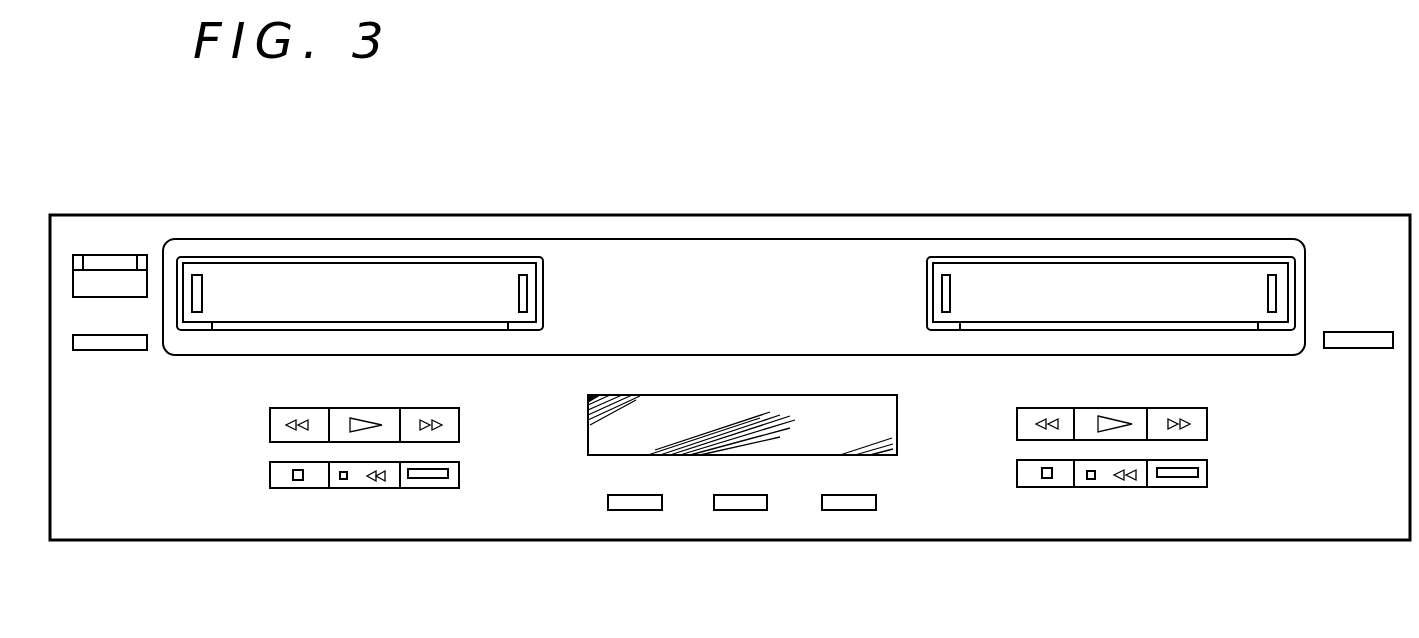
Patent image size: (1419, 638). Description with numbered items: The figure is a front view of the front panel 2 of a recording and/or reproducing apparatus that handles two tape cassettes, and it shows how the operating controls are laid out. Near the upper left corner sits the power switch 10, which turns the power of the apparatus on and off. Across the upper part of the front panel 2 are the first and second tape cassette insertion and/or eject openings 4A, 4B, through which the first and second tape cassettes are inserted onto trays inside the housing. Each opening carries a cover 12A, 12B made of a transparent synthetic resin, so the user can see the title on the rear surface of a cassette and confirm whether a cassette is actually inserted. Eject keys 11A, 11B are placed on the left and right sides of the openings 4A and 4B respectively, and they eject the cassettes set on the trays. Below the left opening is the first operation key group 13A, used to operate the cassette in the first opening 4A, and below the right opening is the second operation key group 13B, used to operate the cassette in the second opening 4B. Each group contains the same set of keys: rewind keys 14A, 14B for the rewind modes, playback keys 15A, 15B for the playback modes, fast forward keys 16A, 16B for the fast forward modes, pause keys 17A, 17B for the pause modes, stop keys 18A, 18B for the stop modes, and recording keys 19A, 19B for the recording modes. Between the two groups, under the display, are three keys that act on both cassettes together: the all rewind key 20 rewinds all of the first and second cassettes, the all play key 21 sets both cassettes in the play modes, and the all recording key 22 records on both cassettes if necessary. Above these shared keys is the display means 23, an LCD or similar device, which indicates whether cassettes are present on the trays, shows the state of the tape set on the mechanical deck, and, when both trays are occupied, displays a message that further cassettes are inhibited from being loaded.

The front panel 2 is at (651, 229).
The first tape cassette insertion and/or eject opening 4A is at (360, 250).
The second tape cassette insertion and/or eject opening 4B is at (1111, 250).
The power switch 10 is at (111, 268).
The eject key 11A is at (108, 351).
The eject key 11B is at (1350, 332).
The cover 12A is at (437, 292).
The cover 12B is at (1192, 275).
The first operation key group 13A is at (363, 486).
The second operation key group 13B is at (1117, 486).
The rewind key 14A is at (275, 409).
The rewind key 14B is at (1017, 430).
The playback key 15A is at (355, 408).
The playback key 15B is at (1104, 408).
The fast forward key 16A is at (446, 408).
The fast forward key 16B is at (1175, 408).
The pause key 17A is at (290, 489).
The pause key 17B is at (1047, 488).
The stop key 18A is at (340, 489).
The stop key 18B is at (1097, 488).
The recording key 19A is at (452, 496).
The recording key 19B is at (1202, 495).
The all rewind key 20 is at (634, 511).
The all play key 21 is at (846, 511).
The all recording key 22 is at (738, 511).
The display means 23 is at (897, 430).